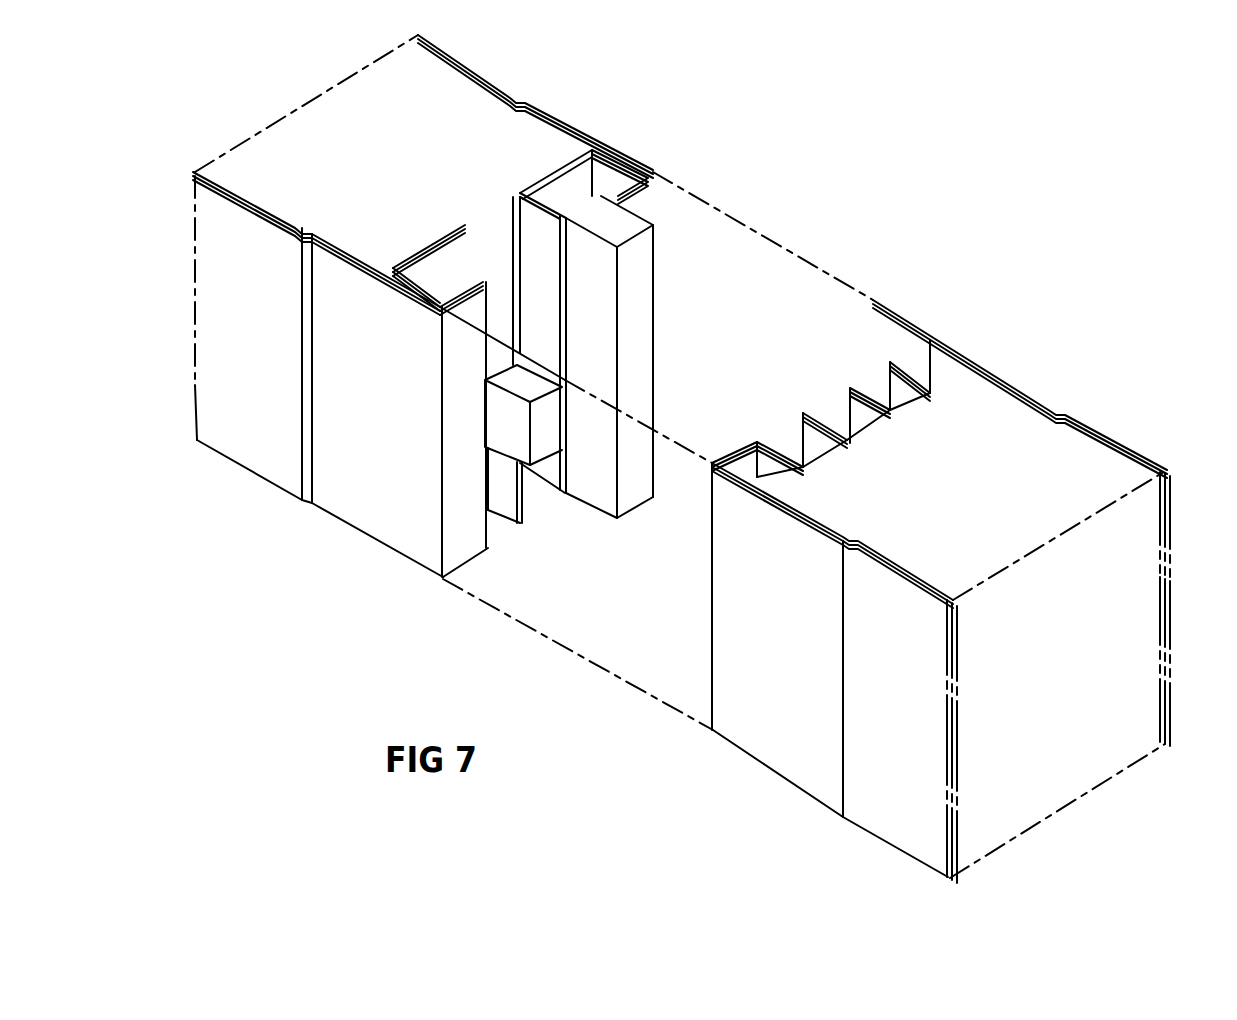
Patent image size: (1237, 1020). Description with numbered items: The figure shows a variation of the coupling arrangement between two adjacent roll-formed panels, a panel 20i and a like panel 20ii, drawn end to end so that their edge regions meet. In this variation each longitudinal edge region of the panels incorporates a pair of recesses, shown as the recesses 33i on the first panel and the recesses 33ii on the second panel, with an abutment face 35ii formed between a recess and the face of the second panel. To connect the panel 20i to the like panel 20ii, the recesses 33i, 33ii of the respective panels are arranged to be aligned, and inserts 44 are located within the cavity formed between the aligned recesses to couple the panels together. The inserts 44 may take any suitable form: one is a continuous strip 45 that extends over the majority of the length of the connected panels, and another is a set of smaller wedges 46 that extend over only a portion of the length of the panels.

The panel 20i is at (458, 98).
The like panel 20ii is at (1067, 458).
The recesses 33i is at (664, 143).
The recesses 33ii is at (872, 382).
The abutment face 35ii is at (712, 643).
The inserts 44 is at (625, 368).
The continuous strip 45 is at (640, 272).
The wedges 46 is at (550, 427).